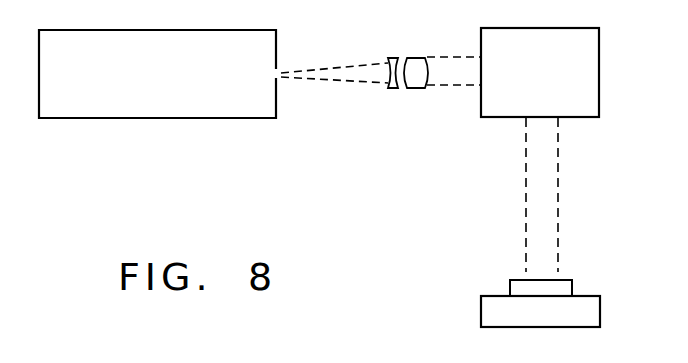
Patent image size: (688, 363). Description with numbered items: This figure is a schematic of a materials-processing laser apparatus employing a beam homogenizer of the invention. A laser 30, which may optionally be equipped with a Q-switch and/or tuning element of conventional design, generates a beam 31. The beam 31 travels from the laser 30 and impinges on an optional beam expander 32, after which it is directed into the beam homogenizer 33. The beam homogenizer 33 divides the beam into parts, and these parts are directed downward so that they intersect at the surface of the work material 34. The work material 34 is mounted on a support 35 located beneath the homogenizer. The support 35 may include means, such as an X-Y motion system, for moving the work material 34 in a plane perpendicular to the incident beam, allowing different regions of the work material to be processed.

The laser 30 is at (176, 87).
The beam 31 is at (332, 83).
The beam expander 32 is at (410, 90).
The beam homogenizer 33 is at (507, 103).
The work material 34 is at (520, 283).
The support 35 is at (487, 313).